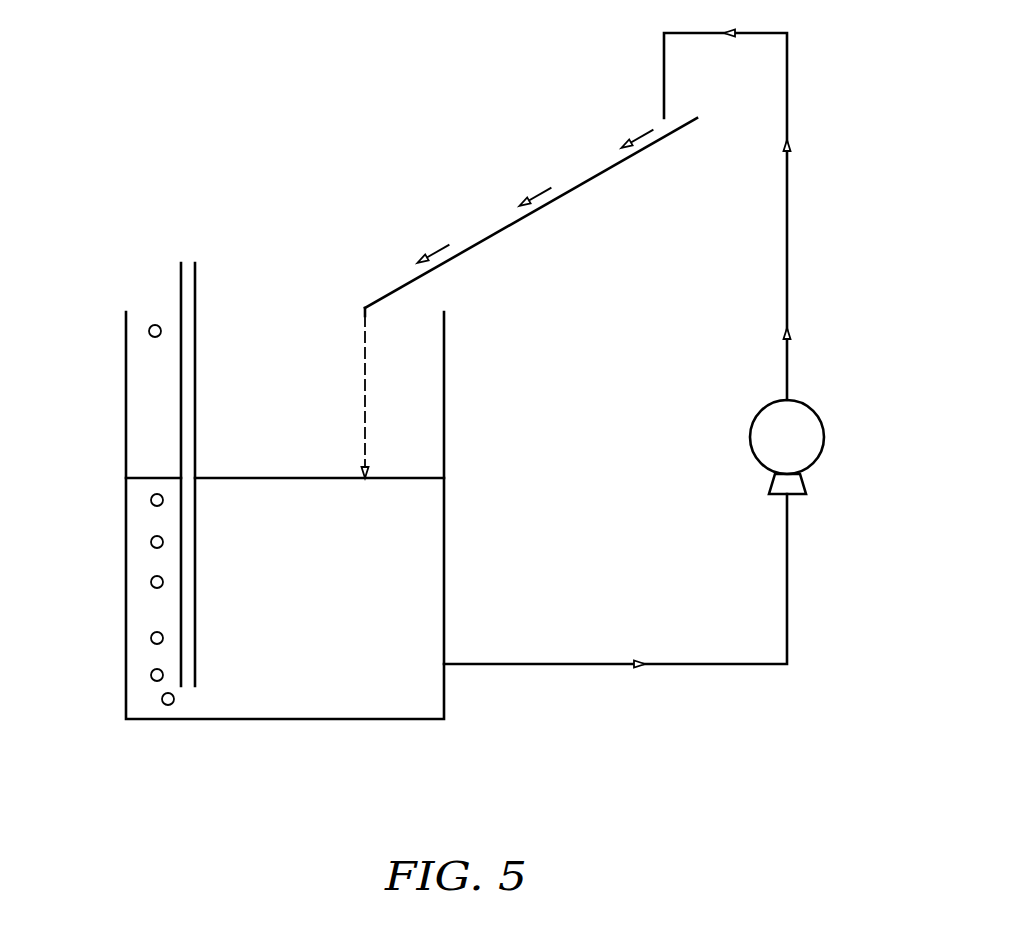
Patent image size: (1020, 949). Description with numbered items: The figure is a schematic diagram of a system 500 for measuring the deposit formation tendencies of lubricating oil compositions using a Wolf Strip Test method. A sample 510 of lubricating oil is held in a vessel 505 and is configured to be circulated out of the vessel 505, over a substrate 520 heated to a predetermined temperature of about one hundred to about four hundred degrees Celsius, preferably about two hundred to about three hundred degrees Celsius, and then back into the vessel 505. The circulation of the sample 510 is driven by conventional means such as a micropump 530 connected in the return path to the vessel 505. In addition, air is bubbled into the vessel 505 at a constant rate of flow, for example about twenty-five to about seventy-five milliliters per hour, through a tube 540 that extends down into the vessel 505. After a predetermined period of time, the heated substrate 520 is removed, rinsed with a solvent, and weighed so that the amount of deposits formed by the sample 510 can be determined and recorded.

The system 500 is at (112, 618).
The vessel 505 is at (118, 694).
The sample 510 is at (335, 702).
The substrate 520 is at (575, 188).
The micropump 530 is at (802, 450).
The tube 540 is at (180, 293).